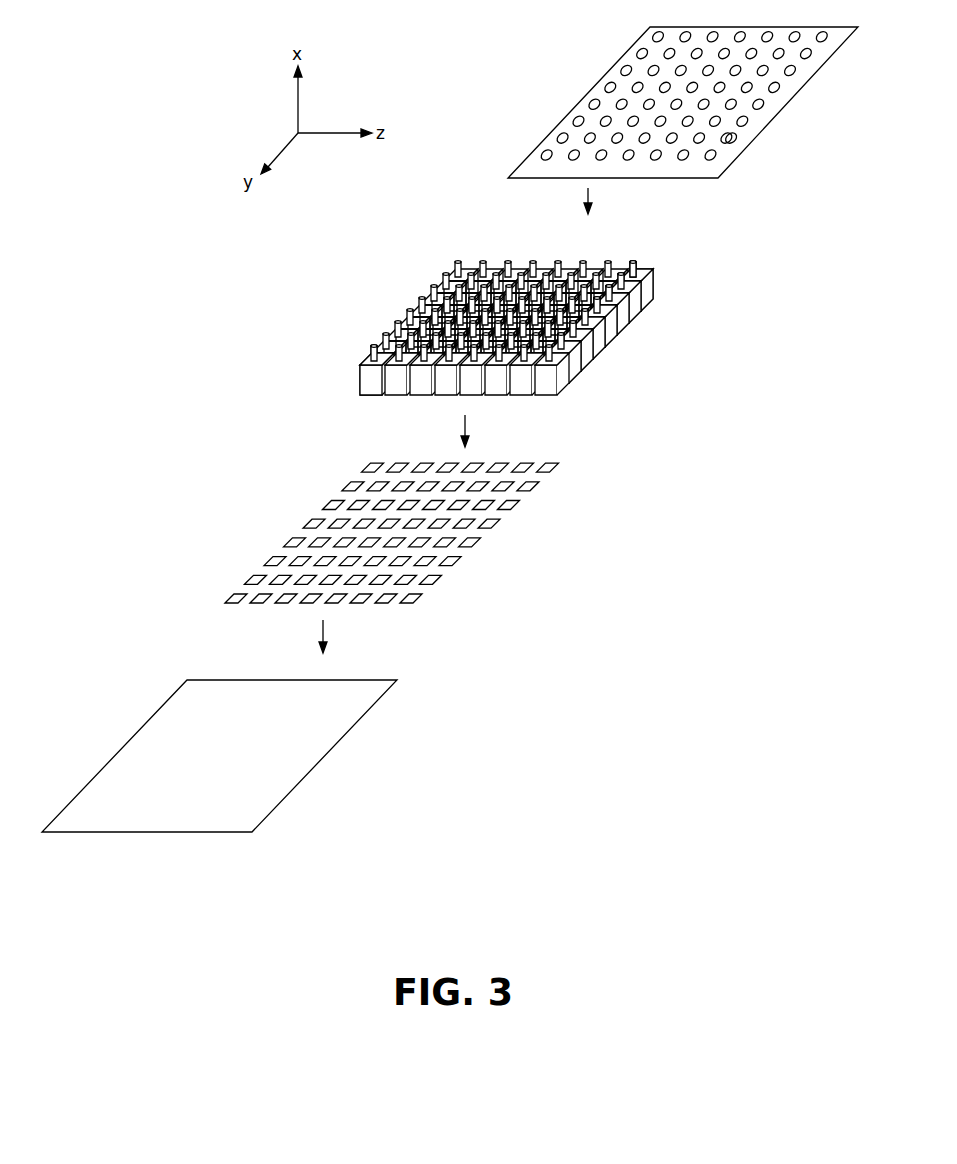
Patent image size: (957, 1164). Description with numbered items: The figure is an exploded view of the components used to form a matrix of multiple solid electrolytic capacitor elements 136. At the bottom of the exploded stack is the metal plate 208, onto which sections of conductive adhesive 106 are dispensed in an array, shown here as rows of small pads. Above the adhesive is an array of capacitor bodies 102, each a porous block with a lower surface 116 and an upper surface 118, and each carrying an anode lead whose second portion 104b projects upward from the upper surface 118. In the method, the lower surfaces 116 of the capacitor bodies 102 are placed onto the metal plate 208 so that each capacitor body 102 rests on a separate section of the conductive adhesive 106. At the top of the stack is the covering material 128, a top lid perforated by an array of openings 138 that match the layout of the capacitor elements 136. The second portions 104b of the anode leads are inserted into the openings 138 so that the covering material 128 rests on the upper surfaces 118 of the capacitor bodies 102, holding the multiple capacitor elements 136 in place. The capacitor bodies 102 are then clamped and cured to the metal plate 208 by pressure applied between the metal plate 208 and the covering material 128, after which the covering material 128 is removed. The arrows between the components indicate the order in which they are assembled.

The capacitor body 102 is at (520, 336).
The second portion of anode lead 104b is at (634, 266).
The conductive adhesive 106 is at (480, 534).
The lower surface 116 is at (372, 396).
The upper surface 118 is at (367, 364).
The covering material 128 is at (580, 98).
The capacitor element 136 is at (520, 336).
The opening 138 is at (733, 142).
The metal plate 208 is at (328, 752).